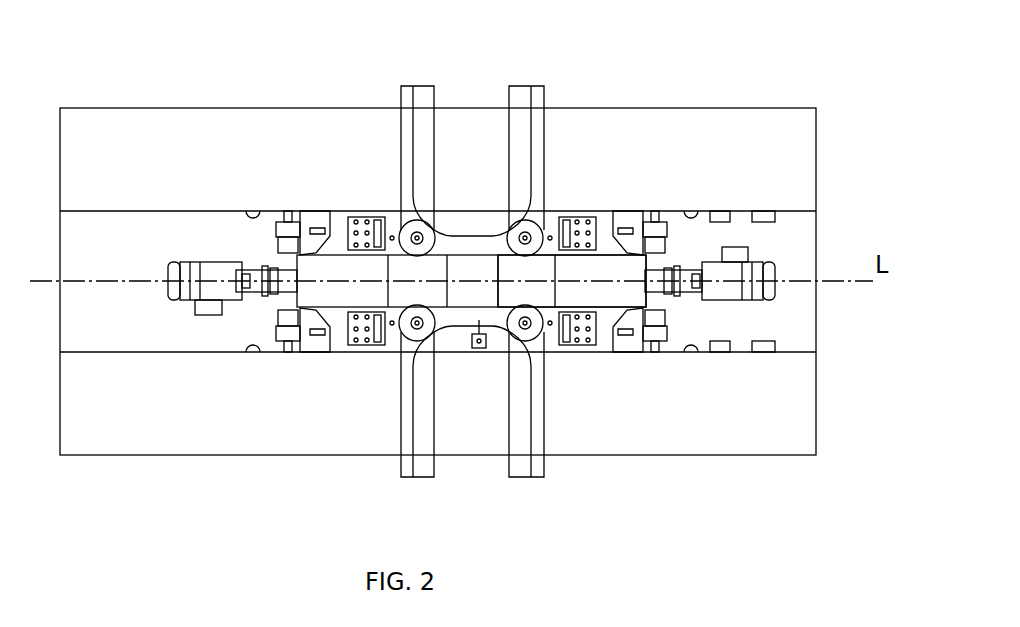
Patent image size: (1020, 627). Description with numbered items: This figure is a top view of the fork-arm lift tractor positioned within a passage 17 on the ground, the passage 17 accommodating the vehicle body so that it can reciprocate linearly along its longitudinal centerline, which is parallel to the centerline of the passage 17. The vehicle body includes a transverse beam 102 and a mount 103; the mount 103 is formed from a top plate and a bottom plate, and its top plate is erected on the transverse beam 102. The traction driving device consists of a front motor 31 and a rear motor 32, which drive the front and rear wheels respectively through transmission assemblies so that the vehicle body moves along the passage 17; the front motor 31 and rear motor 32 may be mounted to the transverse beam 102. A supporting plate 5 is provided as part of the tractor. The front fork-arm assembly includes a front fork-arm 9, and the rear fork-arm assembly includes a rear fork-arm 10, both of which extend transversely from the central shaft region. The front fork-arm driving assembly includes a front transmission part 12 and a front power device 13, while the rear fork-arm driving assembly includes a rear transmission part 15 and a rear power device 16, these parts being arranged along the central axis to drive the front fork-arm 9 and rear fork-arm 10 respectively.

The passage 17 is at (100, 233).
The front motor 31 is at (205, 263).
The rear motor 32 is at (742, 250).
The front fork-arm 9 is at (421, 95).
The rear fork-arm 10 is at (538, 95).
The supporting plate 5 is at (468, 237).
The front transmission part 12 is at (410, 283).
The front power device 13 is at (265, 283).
The rear transmission part 15 is at (537, 287).
The rear power device 16 is at (687, 297).
The transverse beam 102 is at (337, 223).
The mount 103 is at (590, 217).